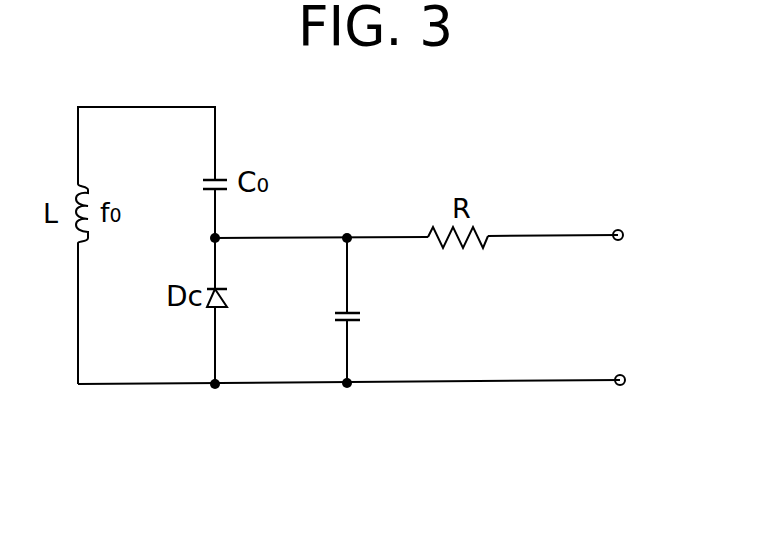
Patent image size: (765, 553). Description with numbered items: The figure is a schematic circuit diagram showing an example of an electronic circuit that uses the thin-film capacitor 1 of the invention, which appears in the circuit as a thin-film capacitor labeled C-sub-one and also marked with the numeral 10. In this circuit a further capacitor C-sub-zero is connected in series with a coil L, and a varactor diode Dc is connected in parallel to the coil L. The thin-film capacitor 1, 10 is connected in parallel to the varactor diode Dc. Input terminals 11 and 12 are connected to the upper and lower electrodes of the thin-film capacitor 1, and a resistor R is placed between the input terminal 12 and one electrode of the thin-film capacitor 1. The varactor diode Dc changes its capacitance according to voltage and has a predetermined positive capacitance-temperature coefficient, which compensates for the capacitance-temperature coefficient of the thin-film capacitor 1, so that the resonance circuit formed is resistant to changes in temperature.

The thin-film capacitor 1 is at (385, 308).
The capacitor C1 (energy storage) 10 is at (399, 310).
The input terminal 11 is at (619, 385).
The input terminal 12 is at (618, 230).